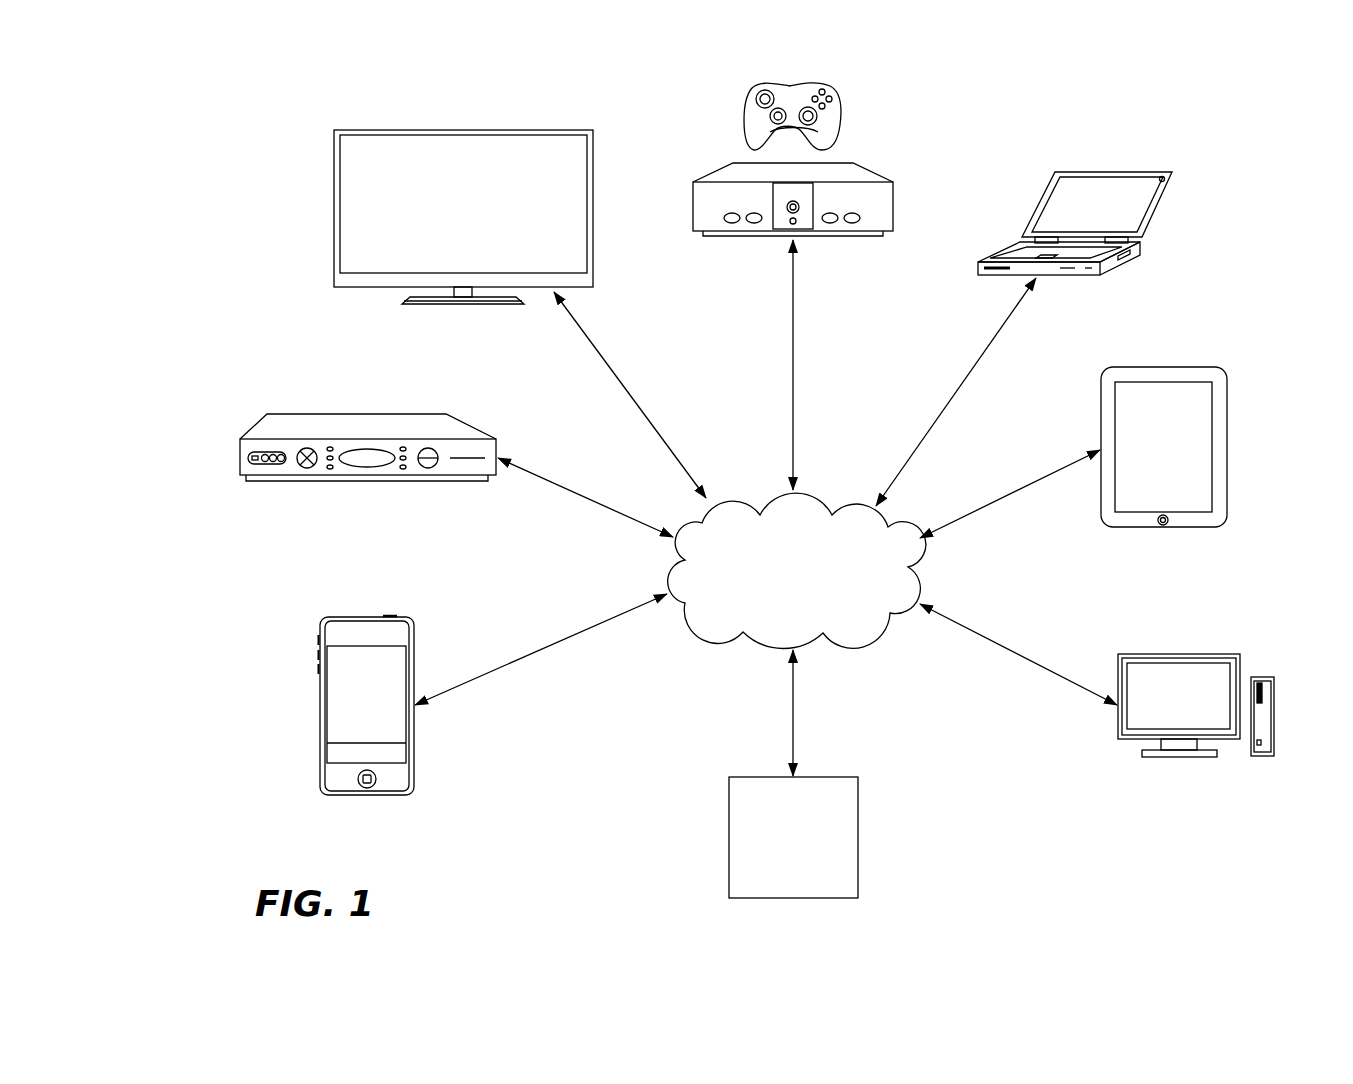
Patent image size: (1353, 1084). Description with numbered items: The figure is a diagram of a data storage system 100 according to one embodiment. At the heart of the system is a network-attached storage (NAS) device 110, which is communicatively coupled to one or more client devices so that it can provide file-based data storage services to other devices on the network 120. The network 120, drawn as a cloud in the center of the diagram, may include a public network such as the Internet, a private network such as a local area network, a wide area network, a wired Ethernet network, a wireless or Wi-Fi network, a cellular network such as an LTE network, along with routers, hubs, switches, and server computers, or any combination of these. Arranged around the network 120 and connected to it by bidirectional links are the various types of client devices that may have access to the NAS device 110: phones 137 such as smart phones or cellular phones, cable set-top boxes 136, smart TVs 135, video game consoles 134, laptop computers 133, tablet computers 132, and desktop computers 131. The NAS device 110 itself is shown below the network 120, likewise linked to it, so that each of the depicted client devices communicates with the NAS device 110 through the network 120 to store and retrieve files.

The data storage system 100 is at (222, 148).
The network-attached storage (NAS) device 110 is at (858, 838).
The network 120 is at (779, 582).
The desktop computer 131 is at (1180, 653).
The tablet computer 132 is at (1162, 366).
The laptop computer 133 is at (1115, 168).
The video game console 134 is at (872, 168).
The smart TV 135 is at (462, 129).
The cable set-top box 136 is at (375, 413).
The phone 137 is at (366, 616).